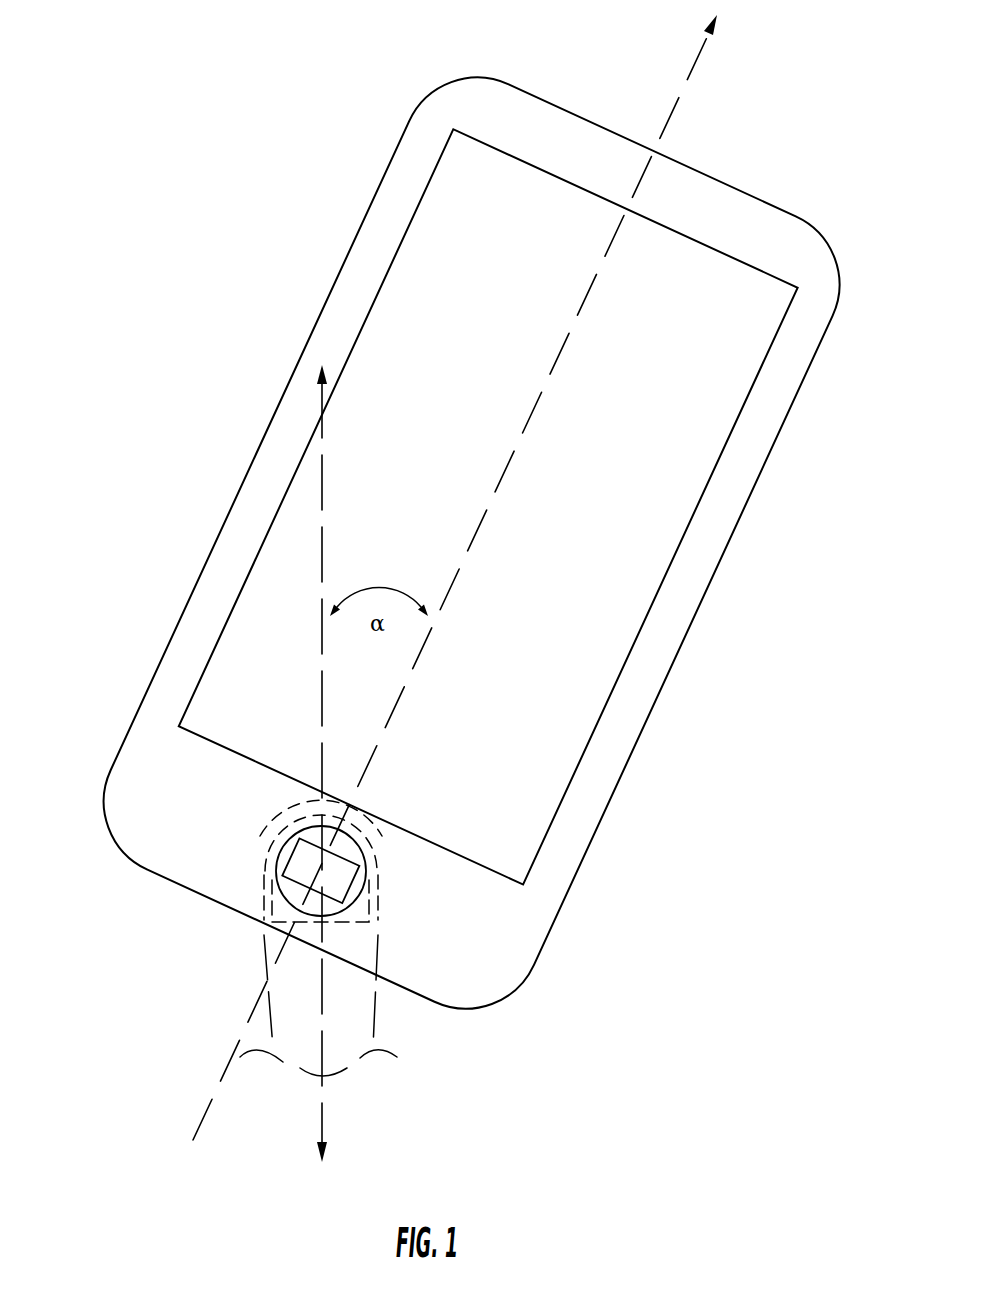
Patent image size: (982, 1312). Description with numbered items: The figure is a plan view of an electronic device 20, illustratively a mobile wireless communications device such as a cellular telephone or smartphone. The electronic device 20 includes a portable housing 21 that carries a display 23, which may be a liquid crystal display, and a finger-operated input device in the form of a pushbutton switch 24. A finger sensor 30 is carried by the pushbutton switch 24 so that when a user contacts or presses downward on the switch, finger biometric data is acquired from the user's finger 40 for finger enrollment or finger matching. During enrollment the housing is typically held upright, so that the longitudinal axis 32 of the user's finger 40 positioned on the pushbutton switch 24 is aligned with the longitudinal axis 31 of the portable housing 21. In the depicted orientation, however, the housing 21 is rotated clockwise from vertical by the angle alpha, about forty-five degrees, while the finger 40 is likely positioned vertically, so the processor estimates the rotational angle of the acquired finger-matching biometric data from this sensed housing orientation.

The electronic device 20 is at (268, 104).
The portable housing 21 is at (403, 130).
The display 23 is at (345, 363).
The pushbutton switch 24 is at (277, 858).
The finger sensor 30 is at (282, 877).
The longitudinal axis of the portable housing 31 is at (672, 118).
The longitudinal axis of the user's finger 32 is at (320, 483).
The user's finger 40 is at (373, 1013).